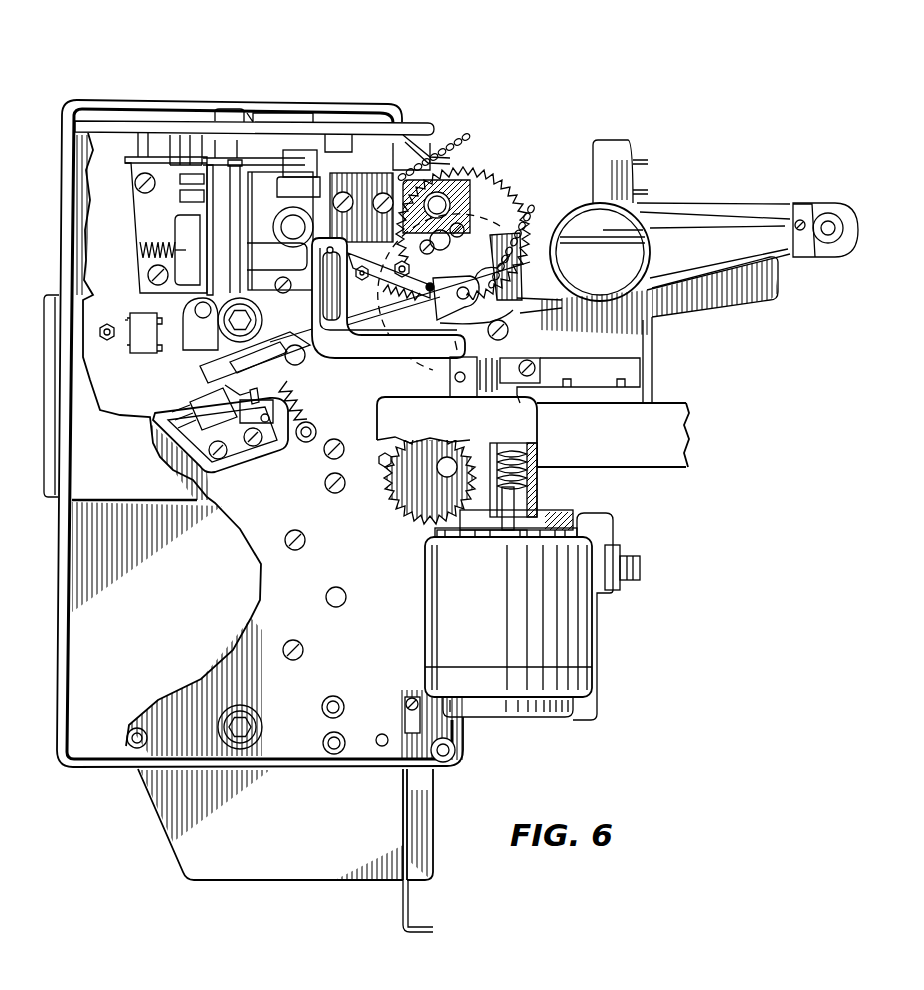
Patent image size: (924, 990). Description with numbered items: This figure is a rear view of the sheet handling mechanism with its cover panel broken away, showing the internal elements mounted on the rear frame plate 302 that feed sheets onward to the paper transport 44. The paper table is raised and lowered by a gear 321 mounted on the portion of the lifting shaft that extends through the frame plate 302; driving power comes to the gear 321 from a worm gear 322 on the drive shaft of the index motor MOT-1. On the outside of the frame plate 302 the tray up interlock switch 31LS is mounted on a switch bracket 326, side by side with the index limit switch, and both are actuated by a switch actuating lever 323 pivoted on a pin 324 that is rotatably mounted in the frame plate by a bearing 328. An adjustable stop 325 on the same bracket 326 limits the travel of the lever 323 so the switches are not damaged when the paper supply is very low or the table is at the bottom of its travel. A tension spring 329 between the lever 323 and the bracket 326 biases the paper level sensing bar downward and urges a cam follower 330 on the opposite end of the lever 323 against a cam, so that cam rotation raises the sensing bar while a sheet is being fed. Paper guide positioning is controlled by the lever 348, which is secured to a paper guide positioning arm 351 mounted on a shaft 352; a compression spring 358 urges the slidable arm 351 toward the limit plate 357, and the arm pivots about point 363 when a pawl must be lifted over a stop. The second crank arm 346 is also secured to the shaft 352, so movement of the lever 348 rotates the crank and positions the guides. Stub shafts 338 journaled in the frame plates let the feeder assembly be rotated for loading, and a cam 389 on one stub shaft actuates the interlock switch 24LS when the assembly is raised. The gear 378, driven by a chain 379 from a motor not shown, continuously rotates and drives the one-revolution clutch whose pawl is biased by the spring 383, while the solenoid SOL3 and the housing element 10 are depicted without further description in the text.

The rear frame plate 302 is at (160, 758).
The lever 348 is at (238, 80).
The paper guide positioning arm 351 is at (182, 203).
The shaft 352 is at (152, 225).
The limit plate 357 is at (190, 232).
The compression spring 358 is at (140, 248).
The pivot point 363 is at (153, 298).
The gear 378 is at (493, 196).
The chain 379 is at (458, 150).
The spring 383 is at (418, 345).
The cam follower 330 is at (497, 326).
The second crank arm 346 is at (570, 370).
The paper transport 44 is at (713, 185).
The solenoid SOL3 is at (633, 158).
The housing 10 is at (694, 433).
The gear 321 is at (420, 517).
The worm gear 322 is at (536, 470).
The index motor MOT-1 is at (592, 643).
The stub shafts 338 is at (124, 328).
The interlock switch 24LS is at (107, 349).
The cam 389 is at (200, 349).
The switch actuating lever 323 is at (206, 375).
The pin 324 is at (300, 368).
The bearing 328 is at (304, 410).
The tension spring 329 is at (302, 447).
The adjustable stop 325 is at (190, 405).
The tray up interlock switch 31LS is at (155, 432).
The switch bracket 326 is at (257, 463).